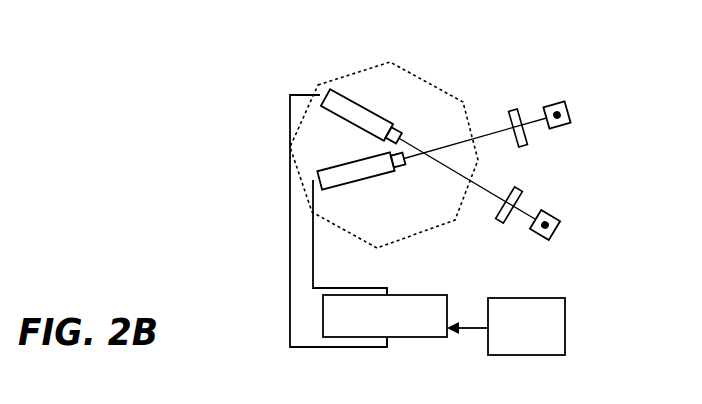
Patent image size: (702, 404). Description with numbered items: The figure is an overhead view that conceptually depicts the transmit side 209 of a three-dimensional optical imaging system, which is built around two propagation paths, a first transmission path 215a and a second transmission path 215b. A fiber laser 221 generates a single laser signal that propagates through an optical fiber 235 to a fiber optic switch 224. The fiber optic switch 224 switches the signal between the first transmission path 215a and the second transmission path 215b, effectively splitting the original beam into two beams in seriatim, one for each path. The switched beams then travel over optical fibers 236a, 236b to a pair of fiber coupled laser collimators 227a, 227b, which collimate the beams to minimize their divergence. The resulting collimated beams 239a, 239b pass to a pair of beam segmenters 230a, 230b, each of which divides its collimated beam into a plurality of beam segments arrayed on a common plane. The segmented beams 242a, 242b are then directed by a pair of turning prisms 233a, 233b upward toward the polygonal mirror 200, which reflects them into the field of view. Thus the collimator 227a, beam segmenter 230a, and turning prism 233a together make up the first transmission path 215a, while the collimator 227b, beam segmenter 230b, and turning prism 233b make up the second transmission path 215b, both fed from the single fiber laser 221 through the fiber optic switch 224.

The polygonal mirror 200 is at (323, 80).
The transmit side 209 is at (252, 120).
The first transmission path 215a is at (330, 267).
The second transmission path 215b is at (322, 369).
The fiber laser 221 is at (566, 299).
The fiber optic switch 224 is at (449, 312).
The fiber coupled laser collimator 227a is at (363, 183).
The fiber coupled laser collimator 227b is at (326, 100).
The beam segmenter 230a is at (517, 108).
The beam segmenter 230b is at (503, 225).
The turning prism 233a is at (566, 103).
The turning prism 233b is at (559, 223).
The optical fiber 235 is at (486, 333).
The optical fiber 236a is at (388, 289).
The optical fiber 236b is at (388, 346).
The collimated beam 239a is at (492, 140).
The collimated beam 239b is at (495, 192).
The segmented beam 242a is at (537, 123).
The segmented beam 242b is at (537, 208).